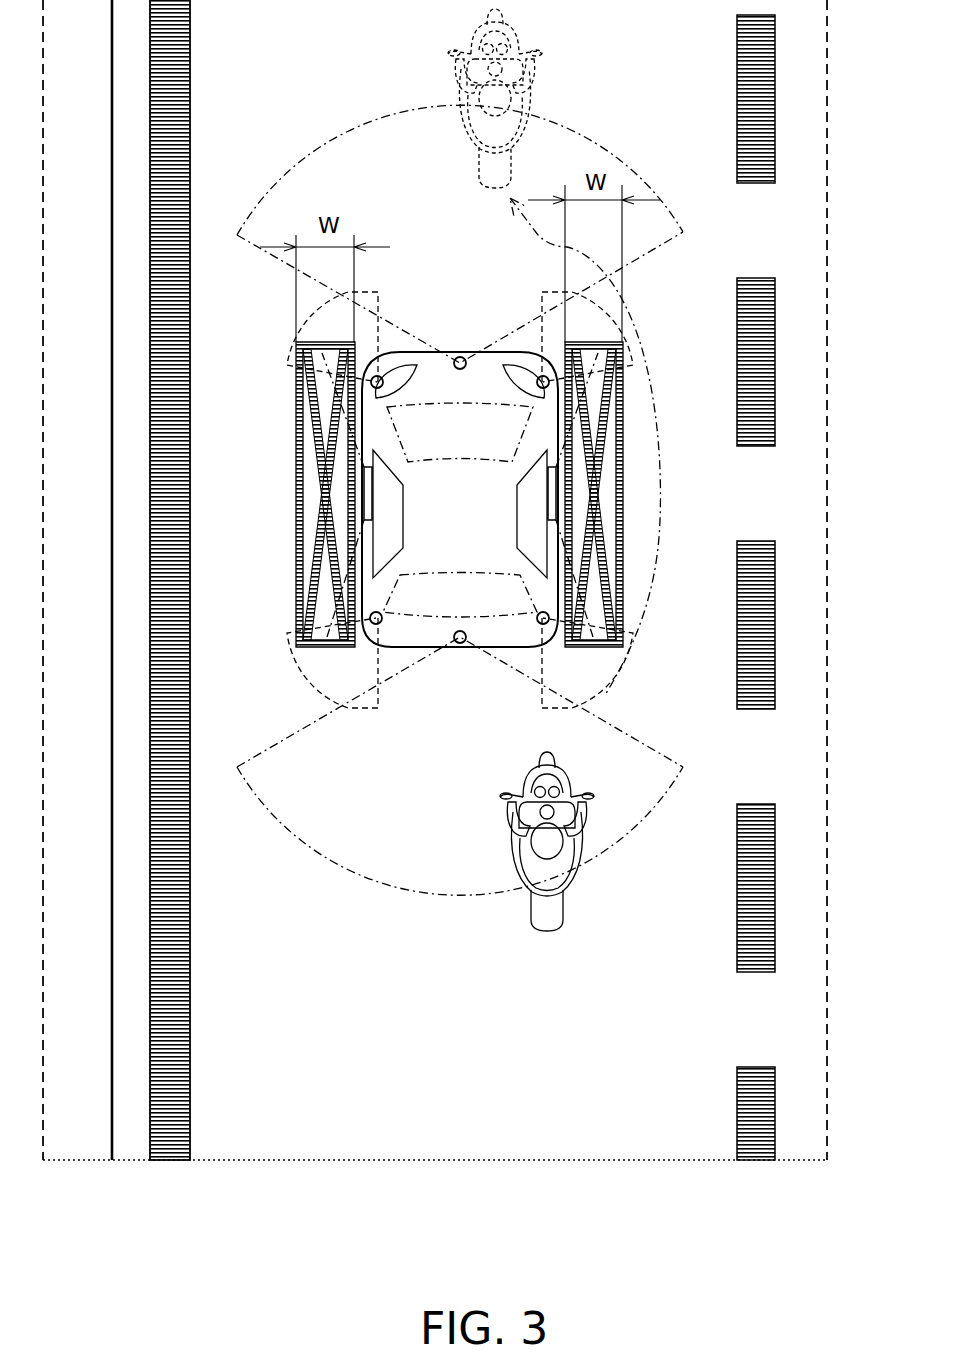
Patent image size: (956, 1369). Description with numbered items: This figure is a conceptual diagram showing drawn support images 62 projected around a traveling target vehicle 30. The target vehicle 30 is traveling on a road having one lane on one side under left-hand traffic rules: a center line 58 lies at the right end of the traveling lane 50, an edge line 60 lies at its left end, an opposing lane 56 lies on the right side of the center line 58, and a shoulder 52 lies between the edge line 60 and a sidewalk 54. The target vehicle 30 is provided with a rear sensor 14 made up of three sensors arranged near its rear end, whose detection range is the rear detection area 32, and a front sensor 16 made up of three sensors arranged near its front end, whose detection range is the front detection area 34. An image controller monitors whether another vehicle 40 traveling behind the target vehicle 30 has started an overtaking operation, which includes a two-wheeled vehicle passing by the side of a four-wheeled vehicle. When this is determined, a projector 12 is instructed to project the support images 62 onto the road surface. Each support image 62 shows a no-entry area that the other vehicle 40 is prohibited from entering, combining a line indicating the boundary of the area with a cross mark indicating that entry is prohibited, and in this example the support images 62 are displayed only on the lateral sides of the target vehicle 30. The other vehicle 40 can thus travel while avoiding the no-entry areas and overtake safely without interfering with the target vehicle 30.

The projector 12 is at (364, 509).
The rear sensor 14 is at (460, 650).
The front sensor 16 is at (460, 357).
The target vehicle 30 is at (511, 650).
The rear detection area 32 is at (643, 827).
The front detection area 34 is at (603, 143).
The other vehicle 40 is at (562, 771).
The traveling lane 50 is at (329, 998).
The shoulder 52 is at (128, 1143).
The sidewalk 54 is at (94, 810).
The opposing lane 56 is at (800, 1135).
The center line 58 is at (760, 1145).
The edge line 60 is at (170, 1150).
The support image 62 is at (312, 470).